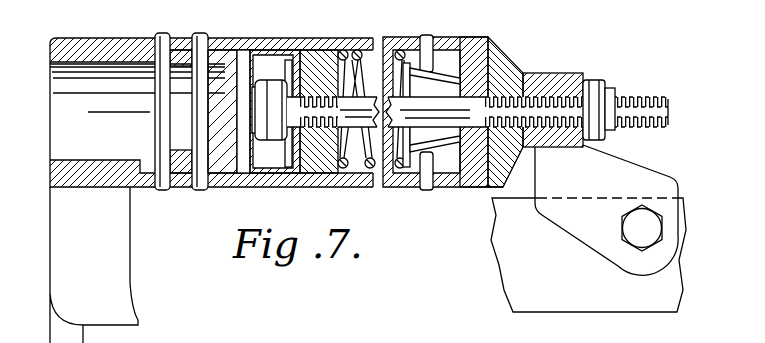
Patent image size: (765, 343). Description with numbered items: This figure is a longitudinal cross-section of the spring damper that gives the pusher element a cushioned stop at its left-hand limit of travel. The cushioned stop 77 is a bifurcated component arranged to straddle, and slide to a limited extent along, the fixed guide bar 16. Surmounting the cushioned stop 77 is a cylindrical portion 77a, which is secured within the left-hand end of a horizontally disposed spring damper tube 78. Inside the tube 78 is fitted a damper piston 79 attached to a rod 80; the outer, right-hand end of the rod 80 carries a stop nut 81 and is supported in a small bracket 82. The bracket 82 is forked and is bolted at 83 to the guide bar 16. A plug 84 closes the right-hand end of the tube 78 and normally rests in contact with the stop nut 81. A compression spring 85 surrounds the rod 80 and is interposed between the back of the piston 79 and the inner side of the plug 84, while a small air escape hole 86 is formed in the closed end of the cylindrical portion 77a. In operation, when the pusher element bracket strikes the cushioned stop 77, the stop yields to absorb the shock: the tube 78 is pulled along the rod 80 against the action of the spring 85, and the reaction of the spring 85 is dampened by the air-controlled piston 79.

The guide bar 16 is at (505, 259).
The cushioned stop 77 is at (94, 265).
The cylindrical portion 77a is at (90, 44).
The spring damper tube 78 is at (403, 183).
The damper piston 79 is at (322, 165).
The rod 80 is at (458, 114).
The stop nut 81 is at (517, 72).
The bracket 82 is at (584, 79).
The bolt 83 is at (647, 242).
The plug 84 is at (475, 55).
The compression spring 85 is at (363, 168).
The air escape hole 86 is at (225, 100).